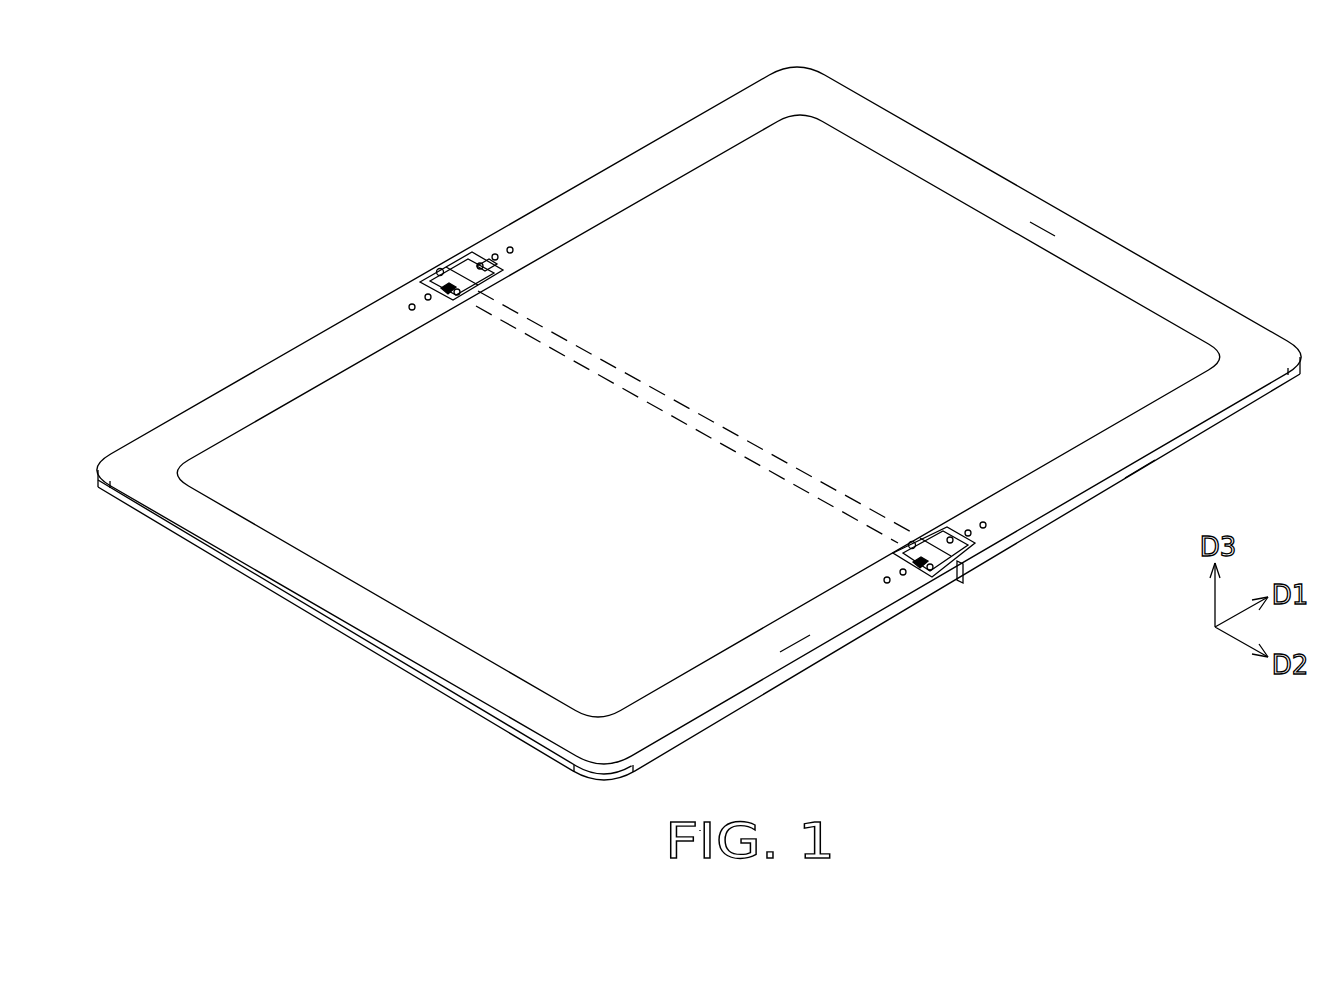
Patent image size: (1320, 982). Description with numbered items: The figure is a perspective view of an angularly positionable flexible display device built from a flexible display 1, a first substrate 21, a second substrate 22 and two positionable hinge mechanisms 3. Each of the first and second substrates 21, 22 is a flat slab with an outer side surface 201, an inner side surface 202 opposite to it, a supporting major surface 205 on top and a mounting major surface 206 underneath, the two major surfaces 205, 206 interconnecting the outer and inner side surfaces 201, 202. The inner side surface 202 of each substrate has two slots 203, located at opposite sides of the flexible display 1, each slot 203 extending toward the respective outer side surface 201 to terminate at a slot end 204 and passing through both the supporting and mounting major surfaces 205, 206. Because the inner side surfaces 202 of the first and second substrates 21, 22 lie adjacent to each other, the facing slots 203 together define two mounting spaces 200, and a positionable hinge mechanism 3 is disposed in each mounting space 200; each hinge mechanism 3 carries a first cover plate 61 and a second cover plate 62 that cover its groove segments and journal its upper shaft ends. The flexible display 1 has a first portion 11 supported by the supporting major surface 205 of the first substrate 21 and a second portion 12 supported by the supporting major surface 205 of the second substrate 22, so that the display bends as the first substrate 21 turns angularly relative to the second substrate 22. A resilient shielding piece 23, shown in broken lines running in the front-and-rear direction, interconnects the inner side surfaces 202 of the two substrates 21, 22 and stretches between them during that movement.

The flexible display 1 is at (702, 447).
The first portion 11 is at (868, 145).
The second portion 12 is at (330, 410).
The first substrate 21 is at (1217, 282).
The second substrate 22 is at (322, 655).
The resilient shielding piece 23 is at (560, 343).
The positionable hinge mechanism 3 is at (696, 424).
The first cover plate 61 is at (945, 552).
The second cover plate 62 is at (937, 558).
The mounting space 200 is at (430, 255).
The outer side surface 201 is at (437, 688).
The inner side surface 202 is at (957, 568).
The slot 203 is at (465, 248).
The slot end 204 is at (958, 537).
The supporting major surface 205 is at (1042, 232).
The mounting major surface 206 is at (1140, 485).